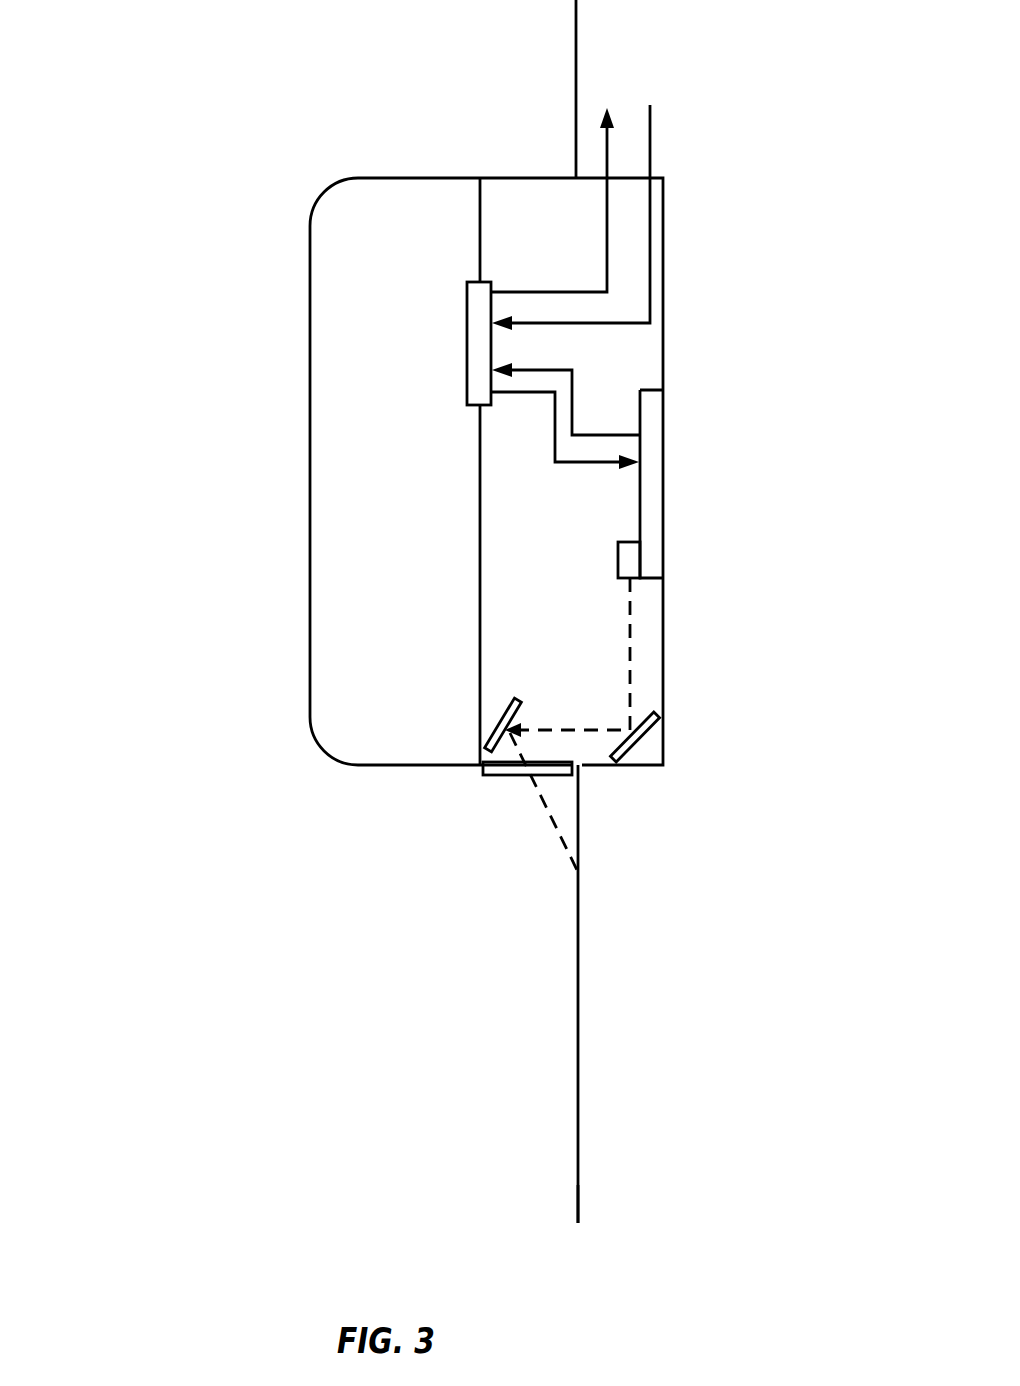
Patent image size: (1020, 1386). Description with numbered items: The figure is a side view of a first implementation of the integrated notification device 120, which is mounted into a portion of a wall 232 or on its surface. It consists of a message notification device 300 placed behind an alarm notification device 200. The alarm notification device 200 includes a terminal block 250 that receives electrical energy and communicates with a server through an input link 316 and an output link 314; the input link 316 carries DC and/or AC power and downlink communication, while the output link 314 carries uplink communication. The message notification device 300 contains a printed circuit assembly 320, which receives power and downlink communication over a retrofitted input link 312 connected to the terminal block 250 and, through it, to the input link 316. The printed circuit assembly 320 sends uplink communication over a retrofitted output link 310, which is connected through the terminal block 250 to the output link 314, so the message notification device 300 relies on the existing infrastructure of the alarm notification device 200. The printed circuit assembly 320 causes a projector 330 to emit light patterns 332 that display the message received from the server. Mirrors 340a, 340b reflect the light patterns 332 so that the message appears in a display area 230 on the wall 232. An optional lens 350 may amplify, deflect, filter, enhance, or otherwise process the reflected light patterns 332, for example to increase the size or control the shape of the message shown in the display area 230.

The integrated notification device 120 is at (158, 98).
The alarm notification device 200 is at (356, 178).
The message notification device 300 is at (724, 140).
The output link 314 is at (606, 148).
The input link 316 is at (650, 290).
The terminal block 250 is at (467, 357).
The retrofitted output link 310 is at (573, 405).
The retrofitted input link 312 is at (555, 440).
The printed circuit assembly 320 is at (663, 520).
The projector 330 is at (639, 580).
The light patterns 332 is at (628, 643).
The mirror 340a is at (630, 766).
The mirror 340b is at (488, 745).
The lens 350 is at (483, 775).
The display area 230 is at (498, 942).
The wall 232 is at (578, 1198).